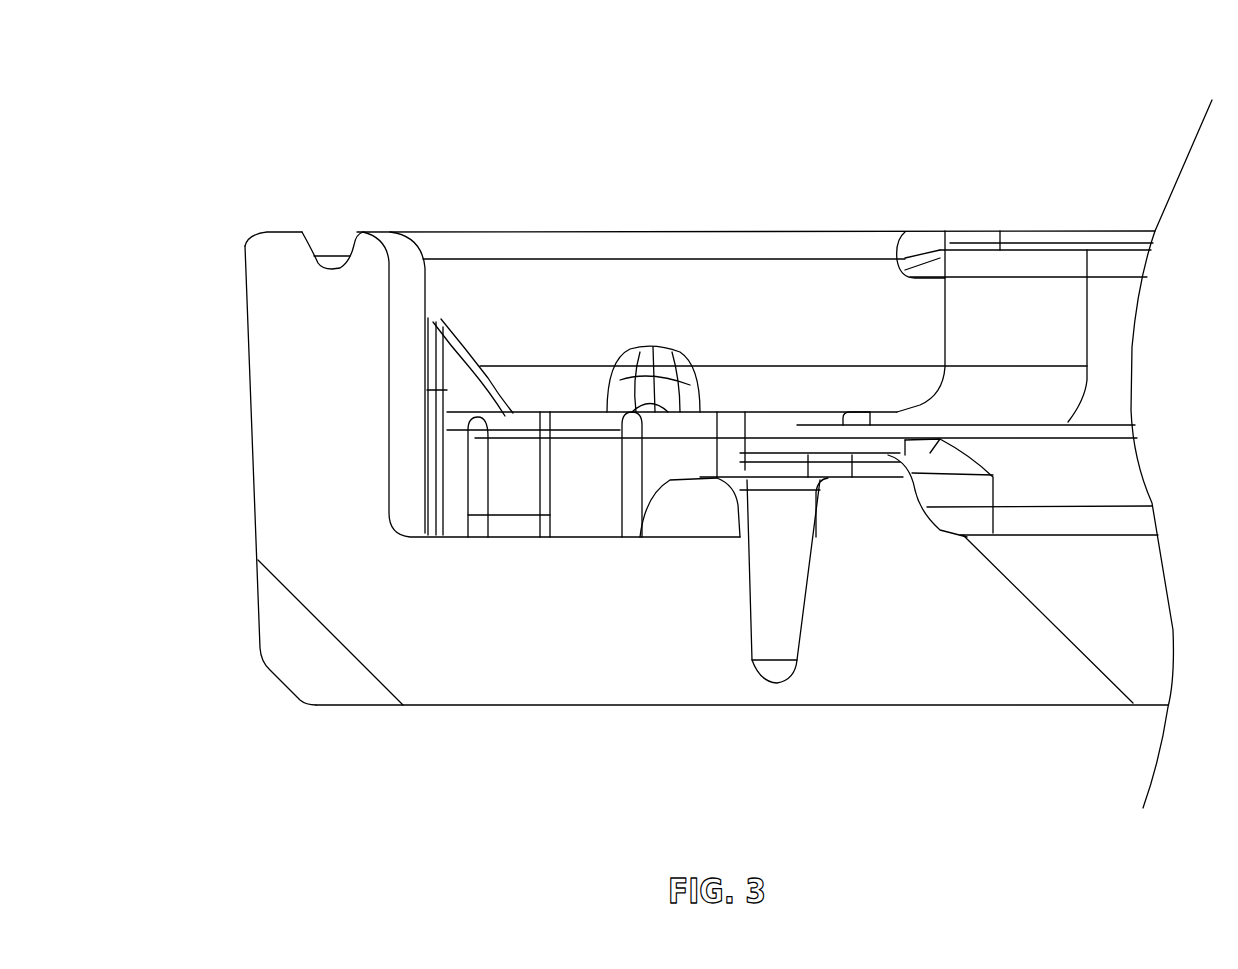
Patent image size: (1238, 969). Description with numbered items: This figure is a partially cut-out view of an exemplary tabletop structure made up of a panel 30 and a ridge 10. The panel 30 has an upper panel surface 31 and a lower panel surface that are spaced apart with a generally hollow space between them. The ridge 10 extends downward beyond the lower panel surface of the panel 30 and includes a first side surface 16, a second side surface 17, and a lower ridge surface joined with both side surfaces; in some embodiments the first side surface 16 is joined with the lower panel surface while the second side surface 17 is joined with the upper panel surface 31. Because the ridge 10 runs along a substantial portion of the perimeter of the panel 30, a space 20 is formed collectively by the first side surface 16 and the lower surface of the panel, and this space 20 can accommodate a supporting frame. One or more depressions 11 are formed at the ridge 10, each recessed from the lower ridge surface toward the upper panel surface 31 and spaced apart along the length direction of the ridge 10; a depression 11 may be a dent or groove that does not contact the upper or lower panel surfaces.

The ridge 10 is at (285, 377).
The depression 11 is at (333, 248).
The first side surface 16 is at (392, 323).
The second side surface 17 is at (243, 431).
The space 20 is at (803, 293).
The panel 30 is at (560, 640).
The upper panel surface 31 is at (908, 698).